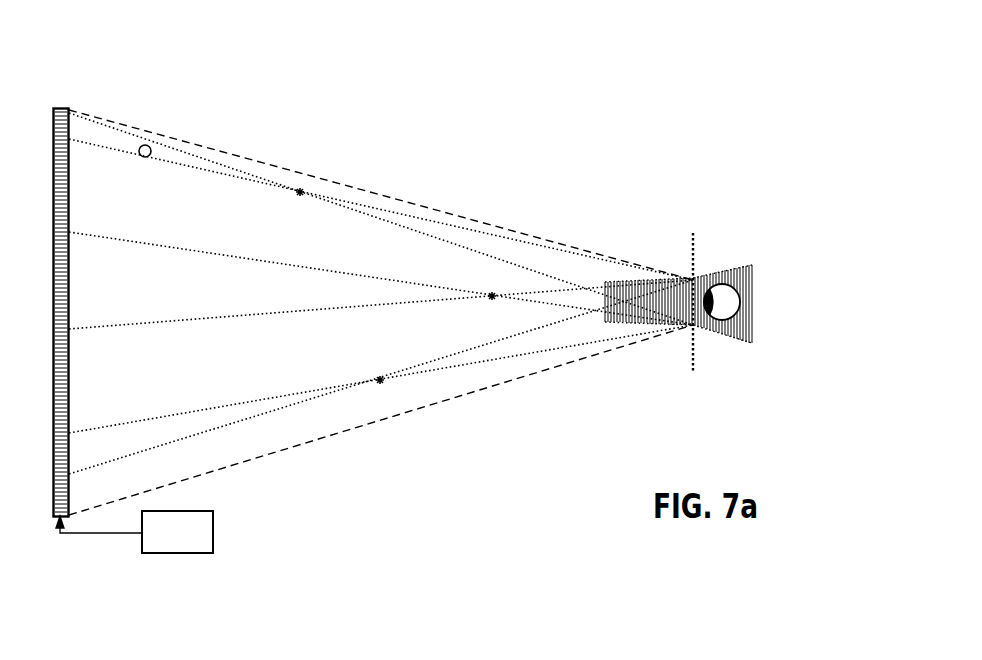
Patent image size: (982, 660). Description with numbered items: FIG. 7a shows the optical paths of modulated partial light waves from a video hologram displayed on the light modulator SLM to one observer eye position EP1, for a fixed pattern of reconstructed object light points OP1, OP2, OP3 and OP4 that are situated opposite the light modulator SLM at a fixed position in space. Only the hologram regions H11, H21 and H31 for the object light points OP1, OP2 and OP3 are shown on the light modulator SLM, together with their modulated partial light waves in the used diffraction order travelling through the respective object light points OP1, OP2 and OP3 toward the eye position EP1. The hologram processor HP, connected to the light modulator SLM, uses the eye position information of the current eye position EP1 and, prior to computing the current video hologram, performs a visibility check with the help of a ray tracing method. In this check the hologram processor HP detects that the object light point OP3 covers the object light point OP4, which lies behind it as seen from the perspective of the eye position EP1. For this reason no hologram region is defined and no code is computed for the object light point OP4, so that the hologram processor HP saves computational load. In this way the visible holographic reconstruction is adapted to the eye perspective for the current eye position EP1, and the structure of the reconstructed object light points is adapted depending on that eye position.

The light modulator SLM is at (102, 294).
The hologram region H31 is at (381, 219).
The hologram region H21 is at (381, 302).
The hologram region H11 is at (381, 377).
The object light point OP1 is at (369, 367).
The object light point OP2 is at (479, 284).
The object light point OP3 is at (309, 215).
The object light point OP4 is at (148, 173).
The eye position EP1 is at (702, 303).
The hologram processor HP is at (134, 532).